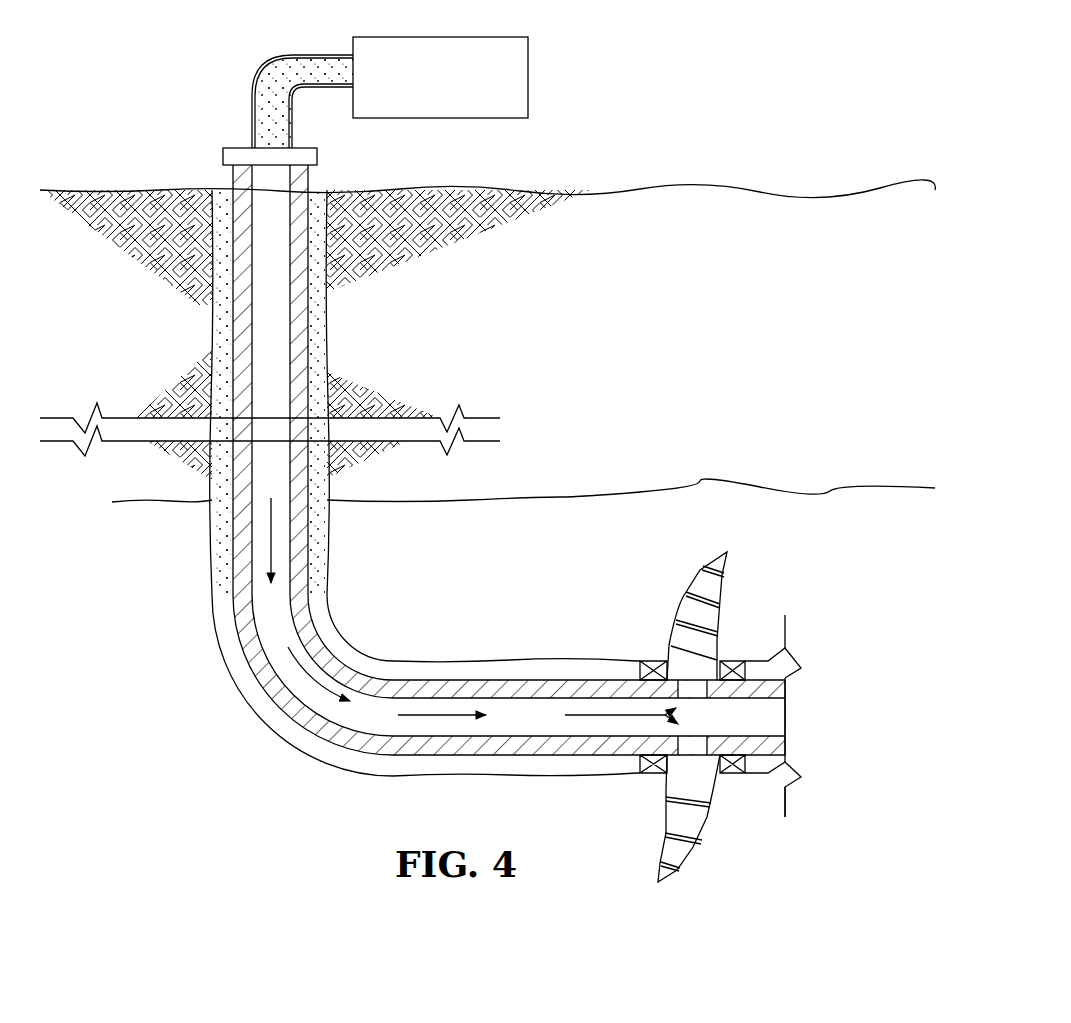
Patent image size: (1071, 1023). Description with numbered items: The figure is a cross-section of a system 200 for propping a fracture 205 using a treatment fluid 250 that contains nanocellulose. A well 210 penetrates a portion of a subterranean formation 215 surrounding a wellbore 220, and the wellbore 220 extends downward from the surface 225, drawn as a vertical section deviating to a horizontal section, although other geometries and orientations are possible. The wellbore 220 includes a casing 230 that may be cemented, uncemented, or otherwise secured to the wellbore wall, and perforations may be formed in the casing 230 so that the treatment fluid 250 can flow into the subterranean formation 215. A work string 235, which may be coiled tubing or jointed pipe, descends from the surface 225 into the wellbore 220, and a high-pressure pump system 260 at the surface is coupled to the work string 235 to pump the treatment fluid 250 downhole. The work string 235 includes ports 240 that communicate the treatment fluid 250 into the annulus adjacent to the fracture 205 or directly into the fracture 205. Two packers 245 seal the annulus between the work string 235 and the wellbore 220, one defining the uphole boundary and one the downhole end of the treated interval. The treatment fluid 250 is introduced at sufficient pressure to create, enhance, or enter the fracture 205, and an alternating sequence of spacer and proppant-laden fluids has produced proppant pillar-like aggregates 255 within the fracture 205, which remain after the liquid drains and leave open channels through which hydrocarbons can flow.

The system 200 is at (797, 80).
The fracture 205 is at (722, 602).
The well 210 is at (223, 736).
The subterranean formation 215 is at (642, 493).
The wellbore 220 is at (215, 328).
The surface 225 is at (643, 190).
The casing 230 is at (269, 405).
The work string 235 is at (240, 605).
The ports 240 is at (697, 693).
The packers 245 is at (762, 770).
The treatment fluid 250 is at (268, 542).
The proppant pillar-like aggregates 255 is at (697, 585).
The high-pressure pump system 260 is at (463, 93).